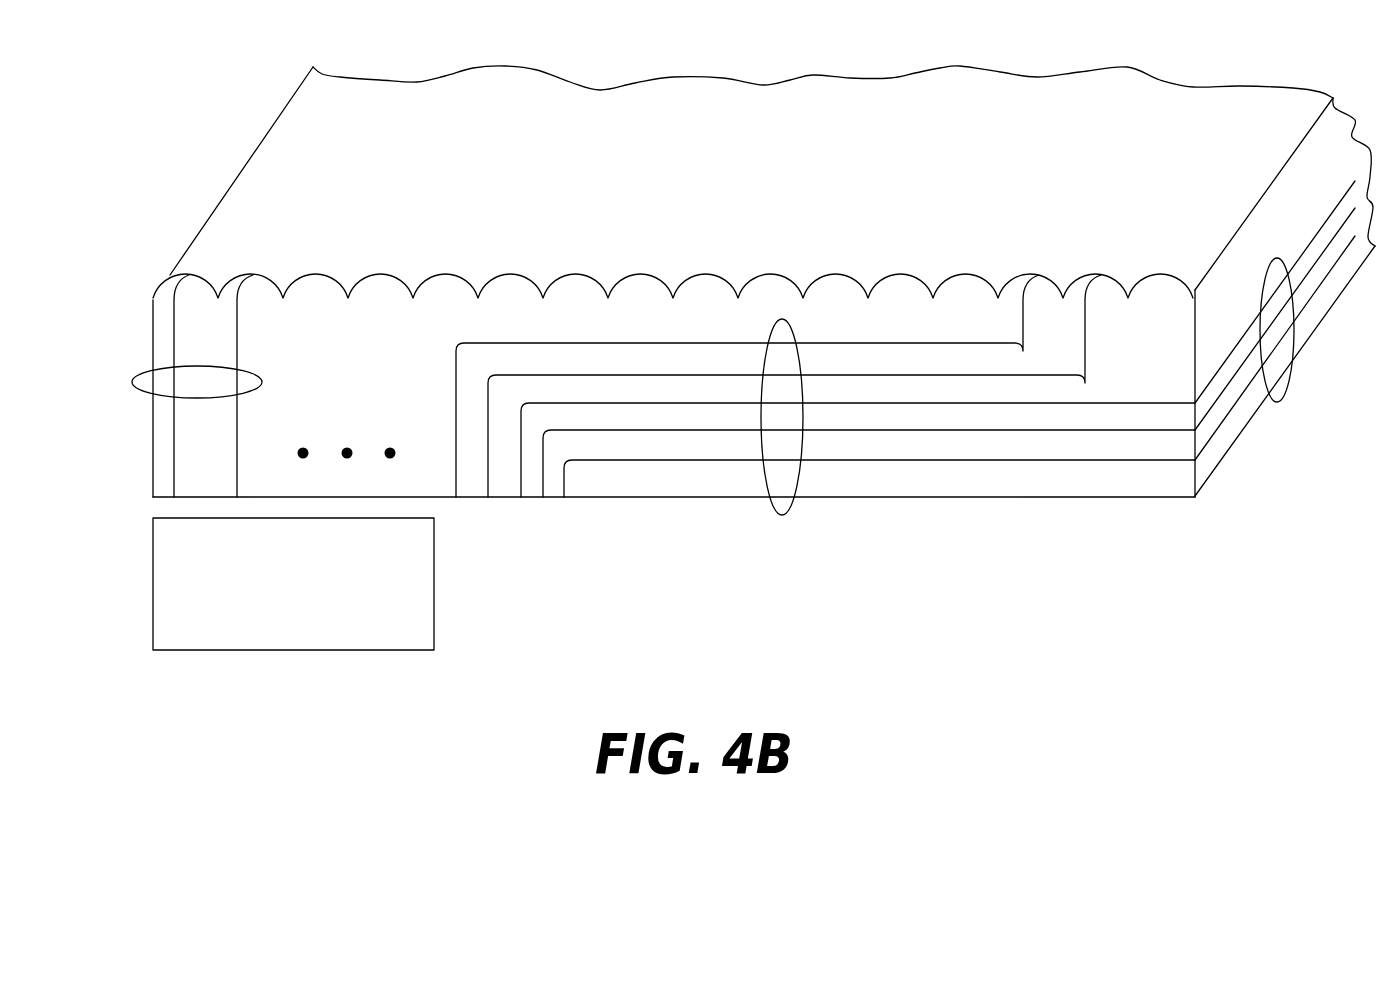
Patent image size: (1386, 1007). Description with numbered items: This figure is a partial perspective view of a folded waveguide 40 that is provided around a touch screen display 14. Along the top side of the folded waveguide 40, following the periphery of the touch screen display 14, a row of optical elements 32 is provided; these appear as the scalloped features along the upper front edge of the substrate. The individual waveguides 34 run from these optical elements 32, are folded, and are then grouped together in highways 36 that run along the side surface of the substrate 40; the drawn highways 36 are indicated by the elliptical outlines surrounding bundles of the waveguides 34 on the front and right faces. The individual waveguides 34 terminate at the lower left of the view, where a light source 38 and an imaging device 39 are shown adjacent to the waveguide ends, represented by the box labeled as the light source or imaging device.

The touch screen display 14 is at (658, 172).
The optical elements 32 is at (385, 277).
The individual waveguides 34 is at (173, 447).
The highways 36 is at (140, 370).
The light source 38 is at (293, 633).
The imaging device 39 is at (292, 652).
The folded waveguide 40 is at (1003, 495).